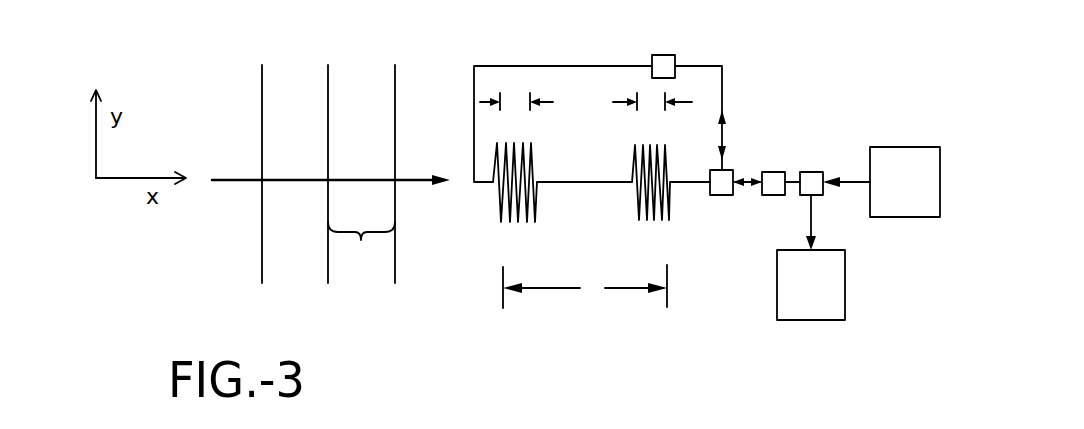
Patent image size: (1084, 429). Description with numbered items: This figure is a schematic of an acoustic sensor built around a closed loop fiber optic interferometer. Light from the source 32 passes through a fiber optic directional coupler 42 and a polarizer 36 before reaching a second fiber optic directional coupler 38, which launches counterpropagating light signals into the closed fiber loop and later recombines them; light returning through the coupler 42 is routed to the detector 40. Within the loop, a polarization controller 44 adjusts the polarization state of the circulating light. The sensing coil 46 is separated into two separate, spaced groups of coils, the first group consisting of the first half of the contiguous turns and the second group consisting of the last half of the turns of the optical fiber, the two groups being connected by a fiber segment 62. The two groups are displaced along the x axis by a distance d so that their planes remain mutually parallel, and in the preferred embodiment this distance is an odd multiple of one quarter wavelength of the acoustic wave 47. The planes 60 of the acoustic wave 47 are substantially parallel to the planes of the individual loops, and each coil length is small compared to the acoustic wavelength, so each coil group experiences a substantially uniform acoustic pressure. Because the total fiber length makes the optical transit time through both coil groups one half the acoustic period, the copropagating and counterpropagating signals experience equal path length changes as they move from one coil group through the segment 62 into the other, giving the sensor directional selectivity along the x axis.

The source 32 is at (900, 147).
The polarizer 36 is at (768, 172).
The fiber optic directional coupler 38 is at (708, 195).
The detector 40 is at (845, 280).
The fiber optic directional coupler 42 is at (822, 172).
The polarization controller 44 is at (676, 62).
The coil 46 is at (600, 130).
The acoustic wave 47 is at (351, 70).
The planes of the acoustic wave 60 is at (361, 249).
The fiber segment 62 is at (607, 183).